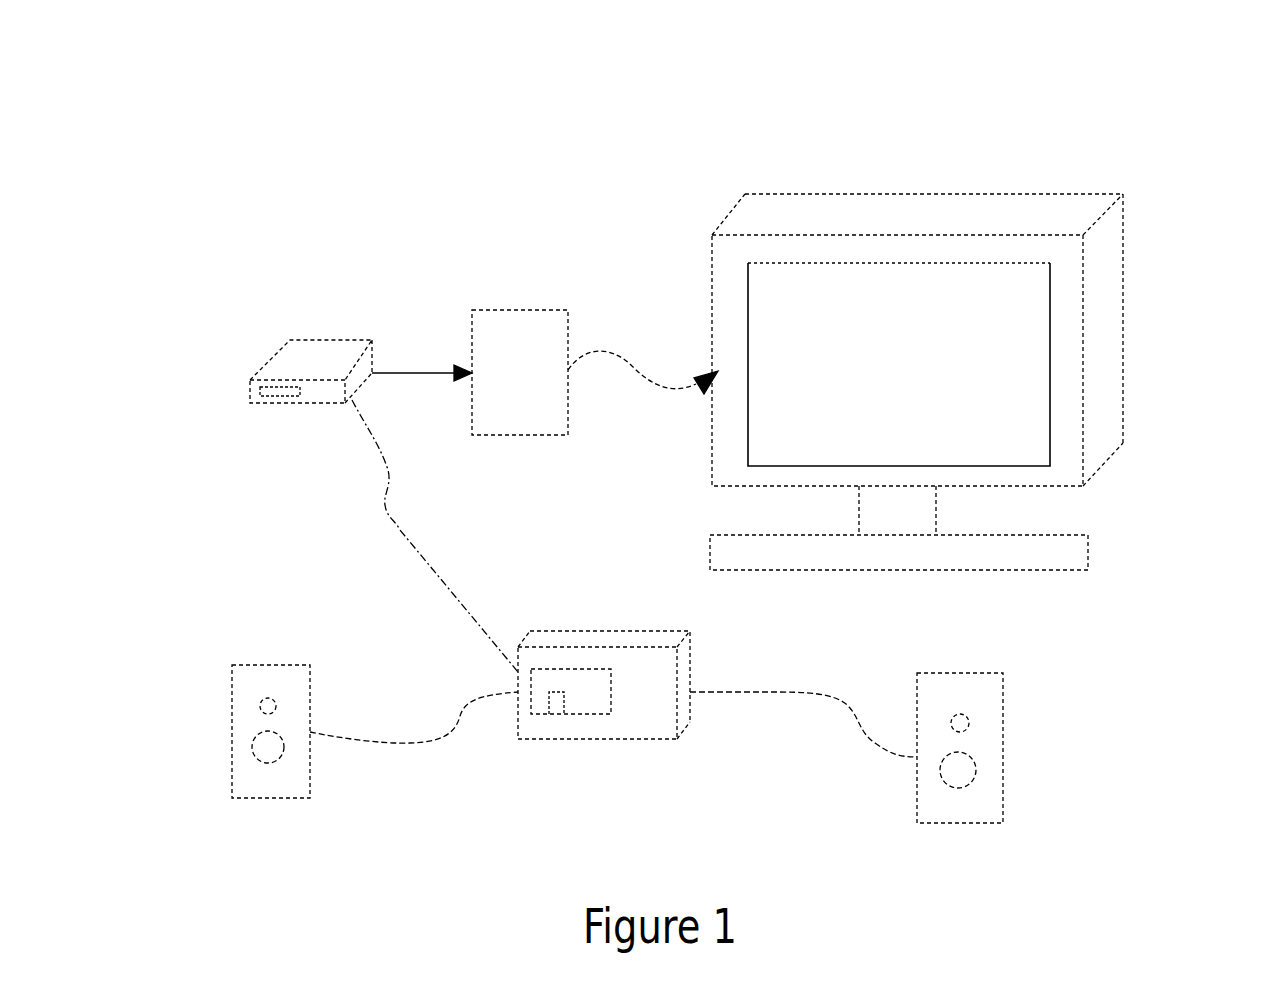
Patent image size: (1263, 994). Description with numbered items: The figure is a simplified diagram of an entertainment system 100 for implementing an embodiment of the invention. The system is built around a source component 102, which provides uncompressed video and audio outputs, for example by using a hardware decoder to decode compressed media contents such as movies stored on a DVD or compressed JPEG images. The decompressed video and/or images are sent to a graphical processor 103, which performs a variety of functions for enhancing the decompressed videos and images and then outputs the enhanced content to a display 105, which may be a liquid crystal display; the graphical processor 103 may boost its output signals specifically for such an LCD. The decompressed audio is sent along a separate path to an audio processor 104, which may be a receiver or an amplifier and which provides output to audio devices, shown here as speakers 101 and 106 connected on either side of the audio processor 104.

The entertainment system 100 is at (1185, 132).
The speaker 101 is at (268, 665).
The source component 102 is at (323, 340).
The graphical processor 103 is at (518, 310).
The audio processor 104 is at (614, 631).
The display 105 is at (893, 194).
The speaker 106 is at (958, 673).